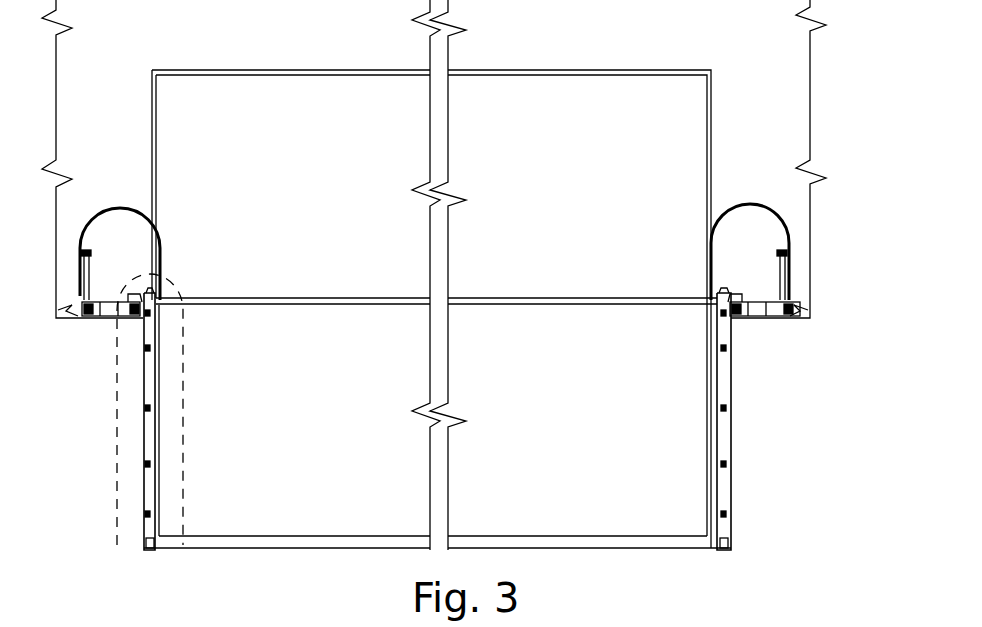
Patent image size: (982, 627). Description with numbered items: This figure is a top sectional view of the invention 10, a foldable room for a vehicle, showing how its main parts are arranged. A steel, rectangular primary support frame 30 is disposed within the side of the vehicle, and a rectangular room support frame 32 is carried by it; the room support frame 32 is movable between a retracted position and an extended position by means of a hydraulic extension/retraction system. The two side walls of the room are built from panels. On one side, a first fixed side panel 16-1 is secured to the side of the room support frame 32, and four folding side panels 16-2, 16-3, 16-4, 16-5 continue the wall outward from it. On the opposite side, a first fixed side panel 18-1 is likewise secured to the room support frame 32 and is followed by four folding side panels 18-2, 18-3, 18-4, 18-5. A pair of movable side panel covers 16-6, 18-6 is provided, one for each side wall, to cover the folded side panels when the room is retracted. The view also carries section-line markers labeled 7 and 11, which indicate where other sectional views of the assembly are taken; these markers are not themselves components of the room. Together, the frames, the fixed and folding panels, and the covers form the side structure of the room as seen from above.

The invention 10 is at (131, 546).
The first fixed side panel 16-1 is at (150, 528).
The folding side panel 16-2 is at (152, 482).
The folding side panel 16-3 is at (148, 440).
The folding side panel 16-4 is at (150, 372).
The folding side panel 16-5 is at (150, 335).
The movable side panel cover 16-6 is at (112, 208).
The first fixed side panel 18-1 is at (732, 523).
The folding side panel 18-2 is at (732, 482).
The folding side panel 18-3 is at (732, 435).
The folding side panel 18-4 is at (730, 385).
The folding side panel 18-5 is at (728, 335).
The movable side panel cover 18-6 is at (786, 222).
The primary support frame 30 is at (122, 316).
The room support frame 32 is at (152, 550).
The section line 7- 7 is at (614, 326).
The section line 11- 11 is at (684, 335).